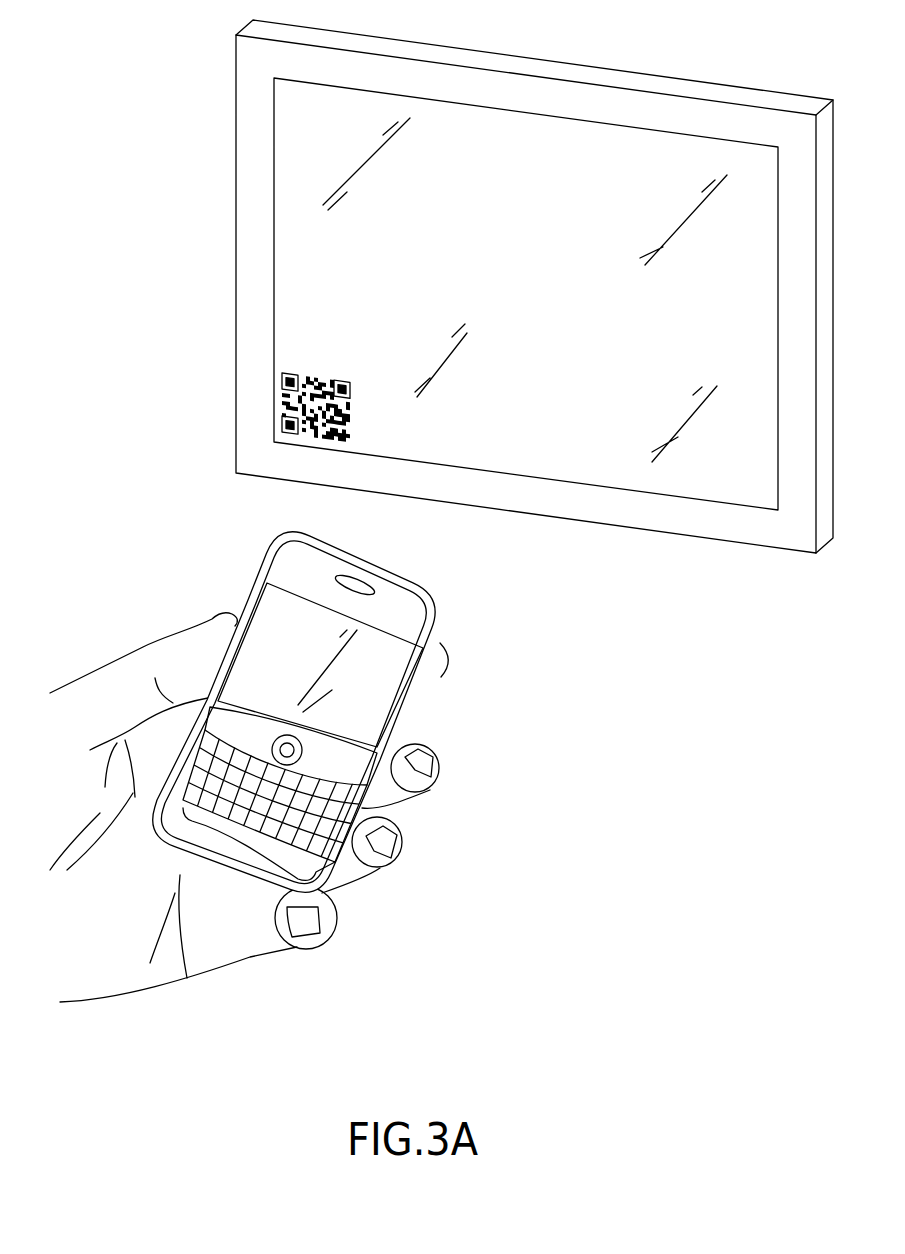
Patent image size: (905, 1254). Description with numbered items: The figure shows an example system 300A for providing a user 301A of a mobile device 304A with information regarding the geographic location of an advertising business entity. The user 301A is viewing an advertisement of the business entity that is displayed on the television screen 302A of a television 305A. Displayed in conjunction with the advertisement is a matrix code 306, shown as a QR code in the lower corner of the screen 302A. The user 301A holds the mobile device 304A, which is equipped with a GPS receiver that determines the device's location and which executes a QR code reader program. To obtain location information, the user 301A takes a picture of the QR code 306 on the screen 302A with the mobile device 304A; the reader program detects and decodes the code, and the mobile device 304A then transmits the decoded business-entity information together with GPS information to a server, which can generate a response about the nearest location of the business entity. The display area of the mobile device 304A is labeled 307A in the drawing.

The system 300A is at (680, 910).
The user 301A is at (80, 682).
The television screen 302A is at (290, 165).
The mobile device 304A is at (262, 565).
The television 305A is at (237, 52).
The matrix code 306 is at (282, 378).
The mobile device display 307A is at (402, 662).